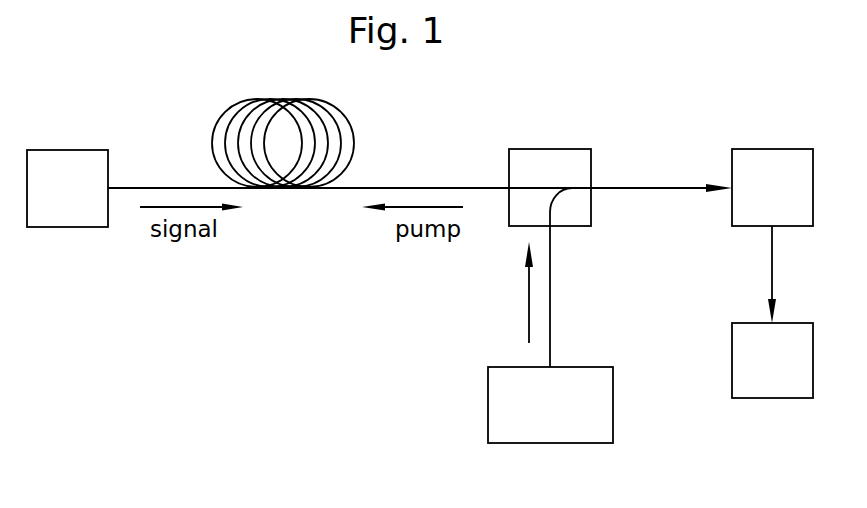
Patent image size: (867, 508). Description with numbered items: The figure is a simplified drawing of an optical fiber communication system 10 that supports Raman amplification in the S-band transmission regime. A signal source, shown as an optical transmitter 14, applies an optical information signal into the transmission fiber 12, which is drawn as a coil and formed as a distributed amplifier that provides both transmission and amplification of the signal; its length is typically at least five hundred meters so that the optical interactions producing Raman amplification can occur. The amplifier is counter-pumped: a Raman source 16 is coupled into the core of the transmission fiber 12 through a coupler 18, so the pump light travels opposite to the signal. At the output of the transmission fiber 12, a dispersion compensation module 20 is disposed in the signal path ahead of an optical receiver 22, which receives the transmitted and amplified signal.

The optical fiber communication system 10 is at (268, 305).
The transmission fiber 12 is at (217, 123).
The optical transmitter 14 is at (52, 201).
The Raman source 16 is at (613, 404).
The coupler 18 is at (591, 215).
The dispersion compensation module 20 is at (756, 201).
The optical receiver 22 is at (756, 374).